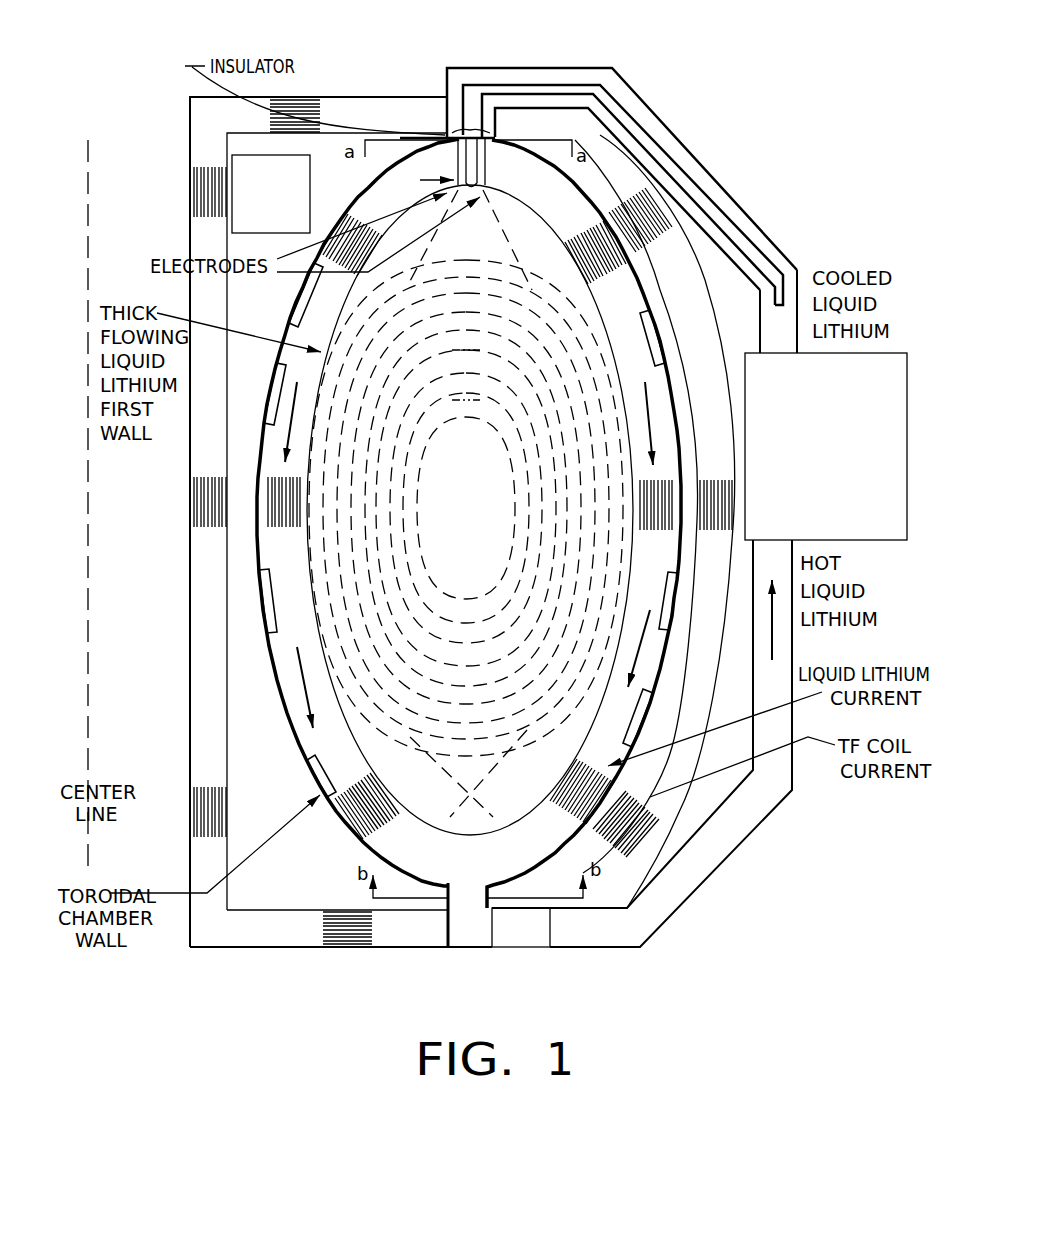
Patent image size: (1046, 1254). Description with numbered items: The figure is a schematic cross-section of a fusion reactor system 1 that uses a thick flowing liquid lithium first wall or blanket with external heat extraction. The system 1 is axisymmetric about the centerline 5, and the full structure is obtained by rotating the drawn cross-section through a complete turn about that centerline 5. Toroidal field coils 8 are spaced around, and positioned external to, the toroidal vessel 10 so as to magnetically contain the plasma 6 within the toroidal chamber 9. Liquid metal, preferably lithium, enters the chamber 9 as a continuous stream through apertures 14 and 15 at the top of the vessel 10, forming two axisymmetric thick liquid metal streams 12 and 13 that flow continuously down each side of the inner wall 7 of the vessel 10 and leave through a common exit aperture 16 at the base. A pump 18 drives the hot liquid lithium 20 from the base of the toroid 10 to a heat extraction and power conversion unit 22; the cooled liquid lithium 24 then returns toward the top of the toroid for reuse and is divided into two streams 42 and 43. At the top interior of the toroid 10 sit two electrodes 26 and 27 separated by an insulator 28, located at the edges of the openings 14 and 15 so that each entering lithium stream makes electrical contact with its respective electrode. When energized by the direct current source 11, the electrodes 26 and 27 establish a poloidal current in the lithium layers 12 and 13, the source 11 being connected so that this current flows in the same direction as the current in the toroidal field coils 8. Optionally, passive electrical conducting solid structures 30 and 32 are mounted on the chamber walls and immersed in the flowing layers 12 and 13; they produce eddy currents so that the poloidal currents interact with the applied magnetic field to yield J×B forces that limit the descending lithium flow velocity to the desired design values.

The system 1 is at (752, 896).
The centerline 5 is at (99, 690).
The plasma 6 is at (447, 548).
The inner wall 7 is at (342, 817).
The toroidal field coils 8 is at (205, 229).
The toroidal chamber 9 is at (427, 805).
The toroidal vessel 10 is at (652, 284).
The direct current source 11 is at (290, 155).
The liquid metal stream 12 is at (700, 470).
The liquid metal stream 13 is at (272, 437).
The aperture 14 is at (520, 100).
The aperture 15 is at (462, 128).
The common exit aperture 16 is at (460, 923).
The pump 18 is at (520, 950).
The hot liquid lithium 20 is at (750, 800).
The heat extraction and power conversion unit 22 is at (887, 377).
The cooled liquid lithium 24 is at (783, 325).
The electrode 26 is at (513, 133).
The electrode 27 is at (455, 132).
The insulator 28 is at (487, 160).
The passive electrical conducting solid structure 30 is at (665, 470).
The passive electrical conducting solid structure 32 is at (293, 293).
The stream 42 is at (505, 93).
The stream 43 is at (472, 68).